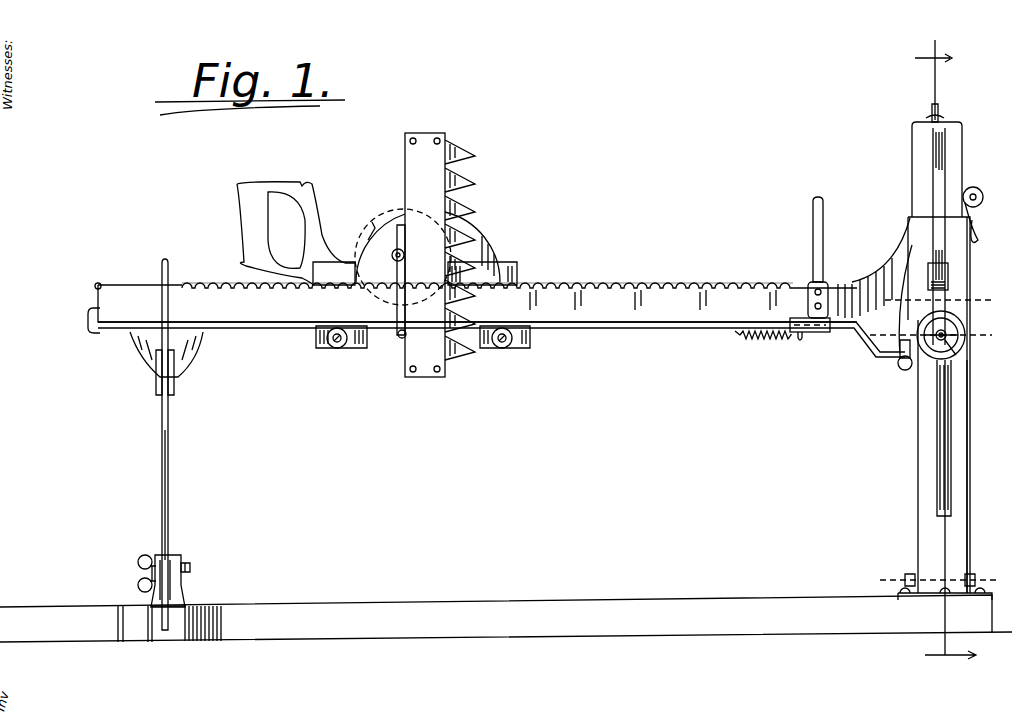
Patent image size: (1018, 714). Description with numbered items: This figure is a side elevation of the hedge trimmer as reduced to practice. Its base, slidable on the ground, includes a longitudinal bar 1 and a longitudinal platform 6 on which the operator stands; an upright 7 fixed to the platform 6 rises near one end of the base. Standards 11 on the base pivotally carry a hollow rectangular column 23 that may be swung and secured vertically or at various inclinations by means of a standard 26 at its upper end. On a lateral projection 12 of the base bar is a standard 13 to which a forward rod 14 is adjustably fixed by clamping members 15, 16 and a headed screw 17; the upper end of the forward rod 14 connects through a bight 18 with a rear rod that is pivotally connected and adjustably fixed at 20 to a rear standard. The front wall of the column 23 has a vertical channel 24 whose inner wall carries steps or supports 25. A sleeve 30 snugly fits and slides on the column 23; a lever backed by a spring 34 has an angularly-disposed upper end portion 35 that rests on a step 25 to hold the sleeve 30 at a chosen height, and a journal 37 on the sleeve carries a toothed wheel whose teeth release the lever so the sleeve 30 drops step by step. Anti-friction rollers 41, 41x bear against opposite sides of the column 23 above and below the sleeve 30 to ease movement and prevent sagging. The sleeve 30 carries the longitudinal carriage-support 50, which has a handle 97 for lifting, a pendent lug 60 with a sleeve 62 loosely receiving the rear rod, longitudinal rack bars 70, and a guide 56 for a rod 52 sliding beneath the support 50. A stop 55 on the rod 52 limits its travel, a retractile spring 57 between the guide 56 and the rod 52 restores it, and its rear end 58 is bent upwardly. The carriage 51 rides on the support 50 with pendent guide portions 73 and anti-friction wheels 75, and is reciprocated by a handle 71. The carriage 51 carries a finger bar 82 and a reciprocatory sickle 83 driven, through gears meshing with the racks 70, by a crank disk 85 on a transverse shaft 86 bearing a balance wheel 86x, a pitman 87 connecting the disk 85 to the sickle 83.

The longitudinal bar 1 is at (692, 613).
The longitudinal platform 6 is at (945, 356).
The upright 7 is at (878, 580).
The standards 11 is at (968, 562).
The lateral projection 12 is at (215, 632).
The standard 13 is at (163, 257).
The forward rod 14 is at (170, 455).
The clamping member 15 is at (158, 552).
The clamping member 16 is at (180, 554).
The headed screw 17 is at (191, 567).
The bight 18 is at (938, 335).
The pivotal adjustable connection 20 is at (185, 598).
The column 23 is at (962, 470).
The vertical channel 24 is at (954, 426).
The steps or vertically spaced supports 25 is at (930, 450).
The standard 26 is at (942, 115).
The sleeve 30 is at (962, 282).
The spring 34 is at (950, 258).
The angularly-disposed upper end portion 35 is at (940, 215).
The journal 37 is at (962, 347).
The anti-friction roller 41 is at (978, 194).
The anti-friction roller 41x is at (903, 372).
The longitudinal carriage-support 50 is at (296, 310).
The carriage 51 is at (518, 272).
The rod 52 is at (613, 328).
The stop 55 is at (795, 318).
The guide 56 is at (816, 336).
The retractile spring 57 is at (755, 338).
The bent rear end of rod 58 is at (90, 312).
The pendent lug 60 is at (150, 346).
The sleeve 62 is at (158, 382).
The longitudinal rack bars 70 is at (650, 282).
The handle 71 is at (304, 200).
The pendent guide portions 73 is at (316, 340).
The anti-friction wheel 75 is at (338, 348).
The finger bar 82 is at (462, 152).
The reciprocatory sickle 83 is at (447, 167).
The crank disk 85 is at (399, 240).
The transverse shaft 86 is at (403, 257).
The balance wheel 86x is at (372, 228).
The pitman 87 is at (401, 338).
The handle 97 is at (824, 238).